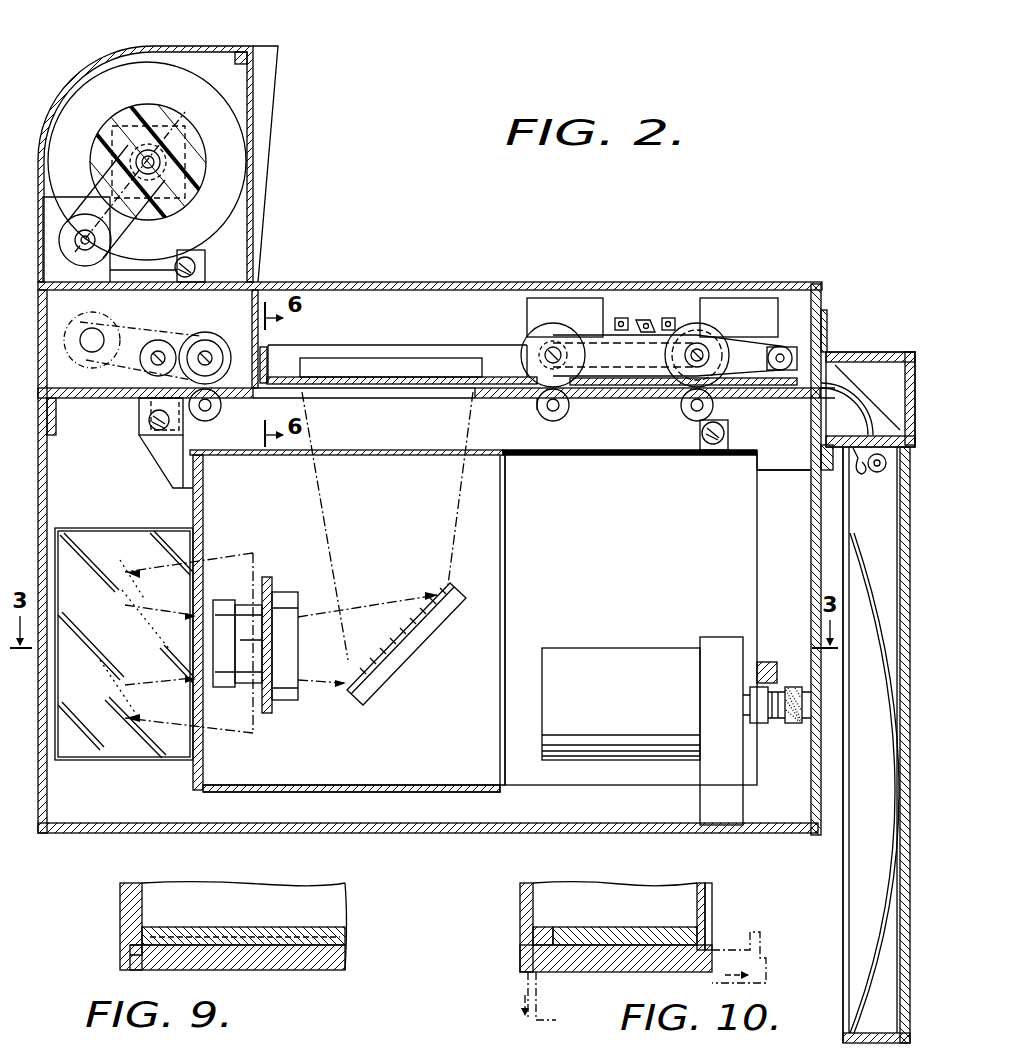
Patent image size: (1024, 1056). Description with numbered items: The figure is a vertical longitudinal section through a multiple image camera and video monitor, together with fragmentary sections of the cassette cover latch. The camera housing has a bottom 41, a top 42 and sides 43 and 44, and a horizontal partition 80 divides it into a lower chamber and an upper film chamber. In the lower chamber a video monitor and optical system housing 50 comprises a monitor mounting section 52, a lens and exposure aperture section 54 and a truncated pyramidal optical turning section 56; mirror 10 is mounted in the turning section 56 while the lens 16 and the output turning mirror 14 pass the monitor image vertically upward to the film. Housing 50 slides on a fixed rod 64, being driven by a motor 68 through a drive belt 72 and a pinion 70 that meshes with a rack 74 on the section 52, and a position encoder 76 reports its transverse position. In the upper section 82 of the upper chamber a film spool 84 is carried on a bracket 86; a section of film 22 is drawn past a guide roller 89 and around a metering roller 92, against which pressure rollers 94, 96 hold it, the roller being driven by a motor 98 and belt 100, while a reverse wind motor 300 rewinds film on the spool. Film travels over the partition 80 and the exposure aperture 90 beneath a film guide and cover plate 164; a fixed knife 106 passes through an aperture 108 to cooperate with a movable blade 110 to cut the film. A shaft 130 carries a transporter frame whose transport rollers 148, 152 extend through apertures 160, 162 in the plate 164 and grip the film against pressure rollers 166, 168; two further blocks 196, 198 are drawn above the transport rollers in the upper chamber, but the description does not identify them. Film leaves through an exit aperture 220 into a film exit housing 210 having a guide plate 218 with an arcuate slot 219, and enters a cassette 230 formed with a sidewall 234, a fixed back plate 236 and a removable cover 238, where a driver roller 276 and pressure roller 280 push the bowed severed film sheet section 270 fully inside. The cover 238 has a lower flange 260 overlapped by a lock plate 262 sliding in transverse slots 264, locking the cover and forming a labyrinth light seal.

In FIG. 2, the mirror 10 is at (128, 530).
In FIG. 2, the mirror 14 is at (398, 641).
In FIG. 2, the lens 16 is at (244, 604).
In FIG. 2, the section of film 22 is at (196, 222).
In FIG. 2, the bottom 41 is at (415, 835).
In FIG. 2, the top 42 is at (392, 284).
In FIG. 2, the side 43 is at (47, 808).
In FIG. 2, the side 44 is at (825, 304).
In FIG. 2, the video monitor and optical system housing 50 is at (762, 474).
In FIG. 2, the monitor mounting section 52 is at (612, 543).
In FIG. 2, the lens and exposure aperture section 54 is at (345, 795).
In FIG. 2, the optical turning section 56 is at (98, 528).
In FIG. 2, the rod 64 is at (149, 420).
In FIG. 2, the motor 68 is at (593, 648).
In FIG. 2, the pinion 70 is at (765, 733).
In FIG. 2, the drive belt 72 is at (795, 726).
In FIG. 2, the rack 74 is at (766, 662).
In FIG. 2, the position encoder 76 is at (750, 696).
In FIG. 2, the partition 80 is at (620, 400).
In FIG. 2, the upper section 82 is at (100, 52).
In FIG. 2, the film spool 84 is at (240, 150).
In FIG. 2, the bracket 86 is at (140, 272).
In FIG. 2, the guide roller 89 is at (197, 263).
In FIG. 2, the exposure aperture 90 is at (470, 397).
In FIG. 2, the metering roller 92 is at (215, 333).
In FIG. 2, the pressure roller 94 is at (142, 362).
In FIG. 2, the pressure roller 96 is at (205, 421).
In FIG. 2, the motor 98 is at (92, 316).
In FIG. 2, the belt 100 is at (160, 322).
In FIG. 2, the fixed knife or anvil 106 is at (252, 452).
In FIG. 2, the aperture 108 is at (300, 375).
In FIG. 2, the movable blade 110 is at (276, 347).
In FIG. 2, the shaft 130 is at (795, 350).
In FIG. 2, the transport roller 148 is at (522, 350).
In FIG. 2, the transport roller 152 is at (725, 345).
In FIG. 2, the aperture 160 is at (565, 402).
In FIG. 2, the aperture 162 is at (668, 401).
In FIG. 2, the film guide and cover plate 164 is at (415, 368).
In FIG. 2, the pressure roller 166 is at (537, 410).
In FIG. 2, the pressure roller 168 is at (690, 436).
In FIG. 2, the lamp housing 196 is at (563, 298).
In FIG. 2, the lamp housing 198 is at (742, 298).
In FIG. 2, the film exit housing 210 is at (860, 352).
In FIG. 2, the guide plate 218 is at (850, 366).
In FIG. 2, the film guide slot 219 is at (865, 398).
In FIG. 2, the exit aperture 220 is at (805, 401).
In FIG. 2, the cassette 230 is at (840, 881).
In FIG. 9, the sidewall 234 is at (120, 911).
In FIG. 10, the sidewall 234 is at (614, 892).
In FIG. 2, the back plate 236 is at (905, 952).
In FIG. 10, the back plate 236 is at (708, 906).
In FIG. 2, the front plate or cover 238 is at (843, 856).
In FIG. 10, the front plate or cover 238 is at (520, 910).
In FIG. 9, the flange 260 is at (335, 930).
In FIG. 10, the flange 260 is at (548, 928).
In FIG. 9, the lock plate 262 is at (290, 966).
In FIG. 10, the lock plate 262 is at (766, 978).
In FIG. 9, the transverse slot 264 is at (128, 951).
In FIG. 2, the film sheet section 270 is at (865, 566).
In FIG. 2, the cassette driver roller 276 is at (886, 468).
In FIG. 2, the pressure roller 280 is at (858, 478).
In FIG. 2, the reverse wind motor 300 is at (108, 250).